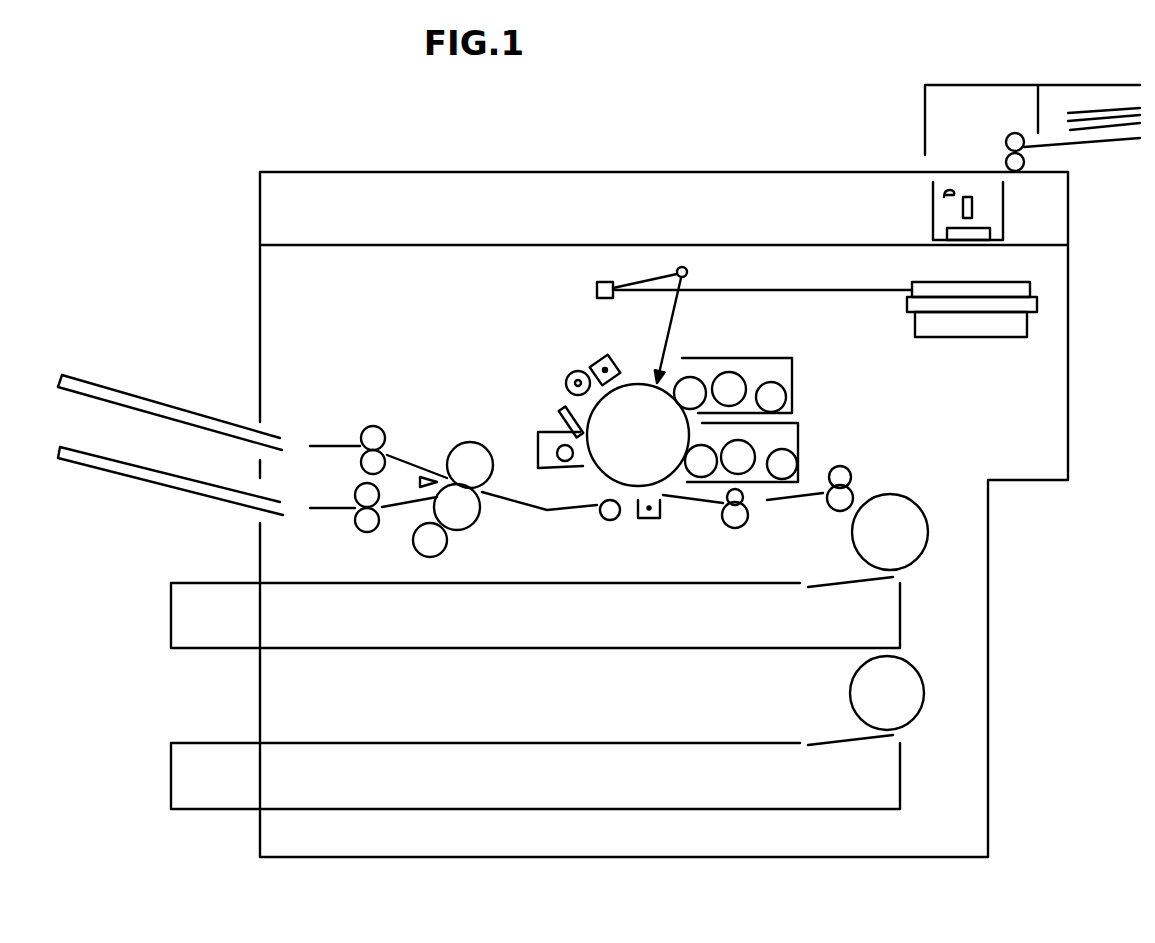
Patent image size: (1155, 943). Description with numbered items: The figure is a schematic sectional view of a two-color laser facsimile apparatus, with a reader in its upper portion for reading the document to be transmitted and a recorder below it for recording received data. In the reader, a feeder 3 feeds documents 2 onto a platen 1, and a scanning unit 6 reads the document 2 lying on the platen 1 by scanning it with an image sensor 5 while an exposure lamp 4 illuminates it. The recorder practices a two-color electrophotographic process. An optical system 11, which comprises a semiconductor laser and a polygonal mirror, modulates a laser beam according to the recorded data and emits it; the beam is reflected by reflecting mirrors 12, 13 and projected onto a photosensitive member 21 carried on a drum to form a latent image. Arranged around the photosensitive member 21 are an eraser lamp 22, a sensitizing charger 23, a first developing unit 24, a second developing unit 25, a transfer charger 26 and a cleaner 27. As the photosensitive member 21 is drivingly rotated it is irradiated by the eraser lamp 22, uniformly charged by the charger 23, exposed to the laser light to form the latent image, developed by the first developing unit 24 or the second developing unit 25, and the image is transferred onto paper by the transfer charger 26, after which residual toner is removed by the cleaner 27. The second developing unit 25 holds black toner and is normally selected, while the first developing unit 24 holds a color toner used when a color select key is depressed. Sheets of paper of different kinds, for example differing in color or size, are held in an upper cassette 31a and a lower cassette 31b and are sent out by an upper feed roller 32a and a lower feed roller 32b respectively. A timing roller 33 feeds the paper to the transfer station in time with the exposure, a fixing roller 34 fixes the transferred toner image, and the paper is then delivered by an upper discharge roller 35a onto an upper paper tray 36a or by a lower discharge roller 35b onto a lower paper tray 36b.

The platen 1 is at (665, 172).
The documents 2 is at (1125, 104).
The feeder 3 is at (1073, 85).
The exposure lamp 4 is at (933, 205).
The image sensor 5 is at (1000, 226).
The scanning unit 6 is at (933, 231).
The optical system 11 is at (1037, 312).
The reflecting mirror 12 is at (597, 290).
The reflecting mirror 13 is at (690, 270).
The photosensitive member 21 is at (600, 405).
The eraser lamp 22 is at (573, 372).
The sensitizing charger 23 is at (600, 357).
The first developing unit 24 is at (795, 390).
The second developing unit 25 is at (800, 450).
The transfer charger 26 is at (648, 520).
The cleaner 27 is at (538, 447).
The upper cassette 31a is at (685, 648).
The lower cassette 31b is at (678, 809).
The upper feed roller 32a is at (915, 503).
The lower feed roller 32b is at (920, 675).
The timing roller 33 is at (748, 527).
The fixing roller 34 is at (478, 525).
The upper discharge roller 35a is at (378, 426).
The lower discharge roller 35b is at (360, 533).
The upper paper tray 36a is at (192, 425).
The lower paper tray 36b is at (188, 493).